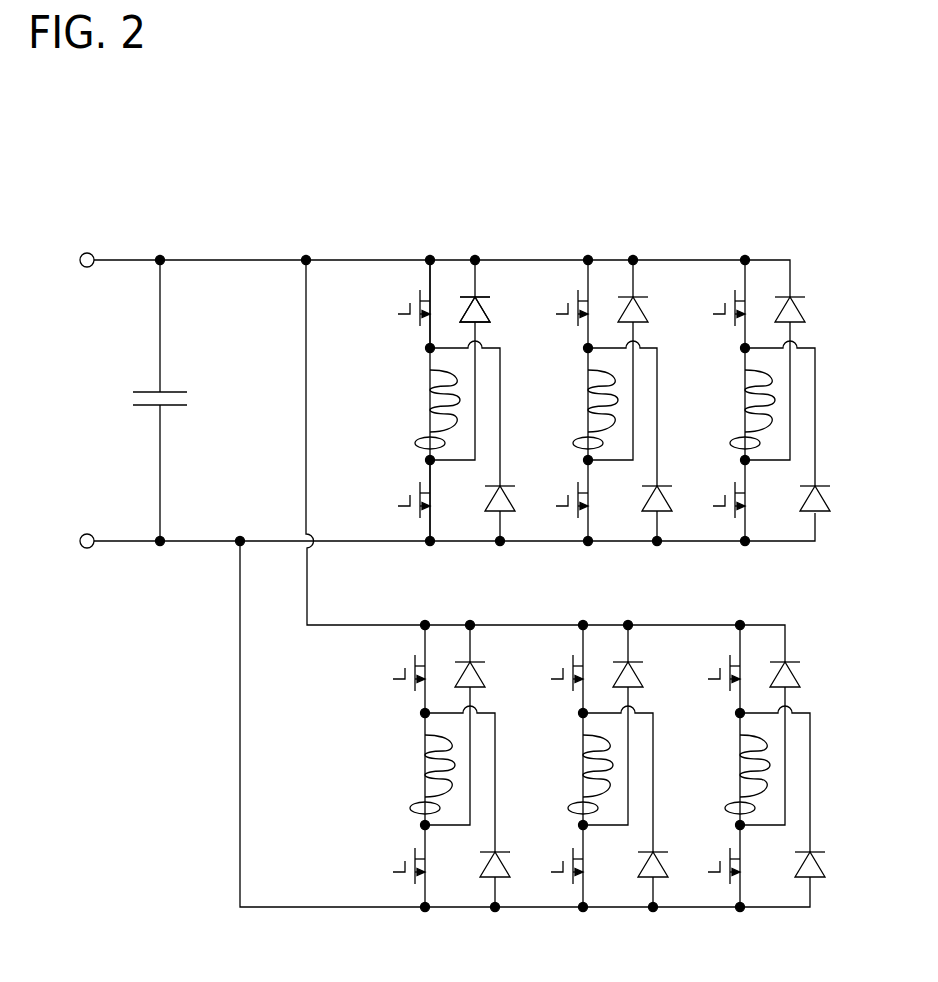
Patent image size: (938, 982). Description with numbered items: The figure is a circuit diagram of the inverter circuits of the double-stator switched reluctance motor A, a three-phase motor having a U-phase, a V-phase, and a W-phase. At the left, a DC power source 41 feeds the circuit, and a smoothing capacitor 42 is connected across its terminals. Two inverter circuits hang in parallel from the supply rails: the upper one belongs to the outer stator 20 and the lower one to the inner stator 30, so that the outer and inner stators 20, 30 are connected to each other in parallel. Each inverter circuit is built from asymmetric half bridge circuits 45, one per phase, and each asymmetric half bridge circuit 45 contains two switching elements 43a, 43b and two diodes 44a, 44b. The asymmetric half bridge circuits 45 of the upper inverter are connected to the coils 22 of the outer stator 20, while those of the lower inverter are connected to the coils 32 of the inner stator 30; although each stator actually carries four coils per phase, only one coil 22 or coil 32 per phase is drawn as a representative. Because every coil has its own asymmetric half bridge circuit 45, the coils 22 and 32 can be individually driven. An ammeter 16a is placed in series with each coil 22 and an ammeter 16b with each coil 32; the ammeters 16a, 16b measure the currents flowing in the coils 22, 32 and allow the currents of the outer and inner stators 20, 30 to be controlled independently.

The DC power source 41 is at (83, 248).
The smoothing capacitor 42 is at (172, 383).
The double-stator switched reluctance motor A is at (400, 224).
The outer stator 20 is at (543, 250).
The inner stator 30 is at (530, 618).
The switching element 43a is at (410, 300).
The switching element 43b is at (410, 496).
The diode 44a is at (487, 314).
The diode 44b is at (510, 498).
The asymmetric half bridge circuit 45 is at (456, 281).
The coil 22 is at (427, 410).
The coil 32 is at (424, 777).
The ammeter 16a is at (422, 443).
The ammeter 16b is at (412, 807).